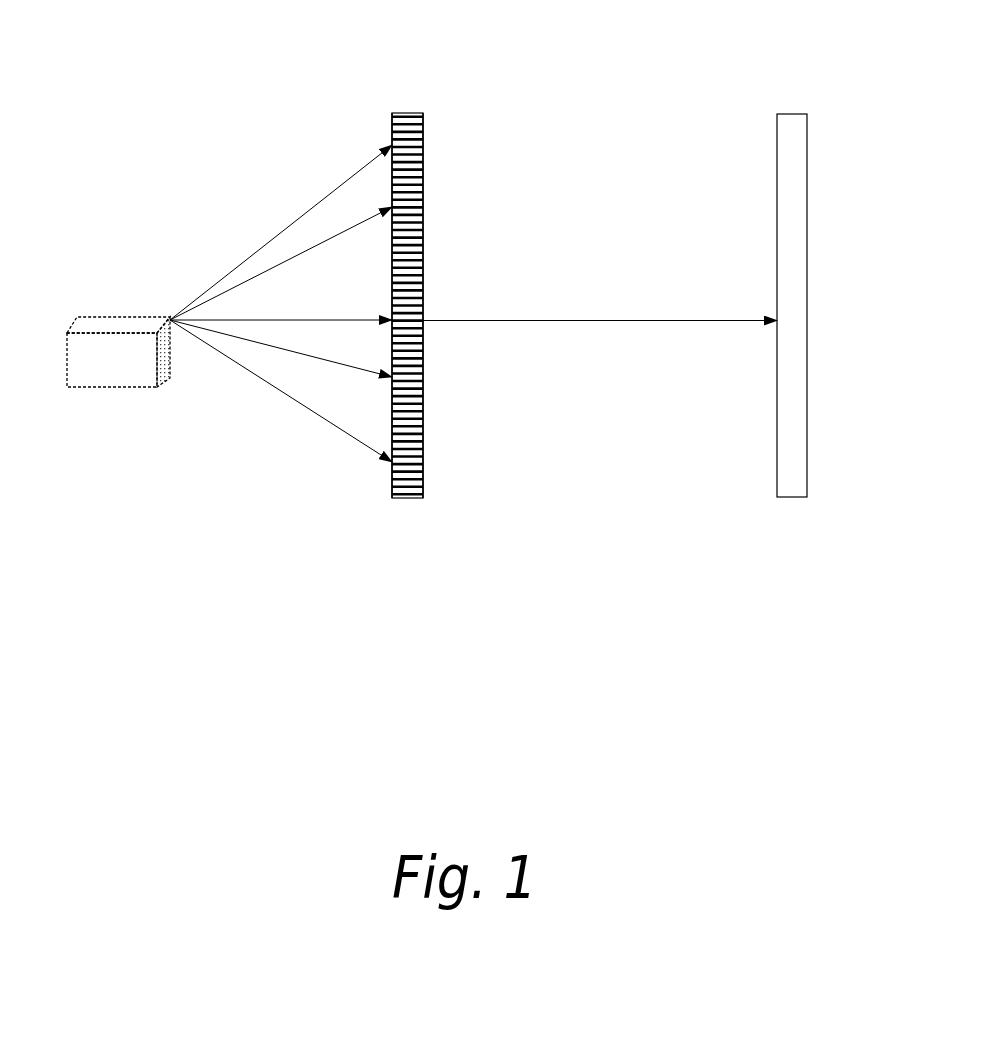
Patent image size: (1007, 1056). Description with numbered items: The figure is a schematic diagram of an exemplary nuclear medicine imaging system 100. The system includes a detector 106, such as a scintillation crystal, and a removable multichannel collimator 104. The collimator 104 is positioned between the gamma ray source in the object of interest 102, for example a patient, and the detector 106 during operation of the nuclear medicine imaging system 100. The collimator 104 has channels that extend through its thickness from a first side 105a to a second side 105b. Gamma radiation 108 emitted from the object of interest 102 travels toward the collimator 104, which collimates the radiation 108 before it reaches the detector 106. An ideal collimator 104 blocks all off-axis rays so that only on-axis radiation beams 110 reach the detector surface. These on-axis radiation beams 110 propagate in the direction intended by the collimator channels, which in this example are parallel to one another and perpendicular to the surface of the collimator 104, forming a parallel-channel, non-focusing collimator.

The nuclear medicine imaging system 100 is at (477, 676).
The object of interest 102 is at (128, 318).
The multichannel collimator 104 is at (413, 113).
The first side 105a is at (392, 133).
The second side 105b is at (423, 133).
The detector 106 is at (792, 114).
The gamma radiation 108 is at (307, 175).
The on-axis radiation beams 110 is at (620, 320).